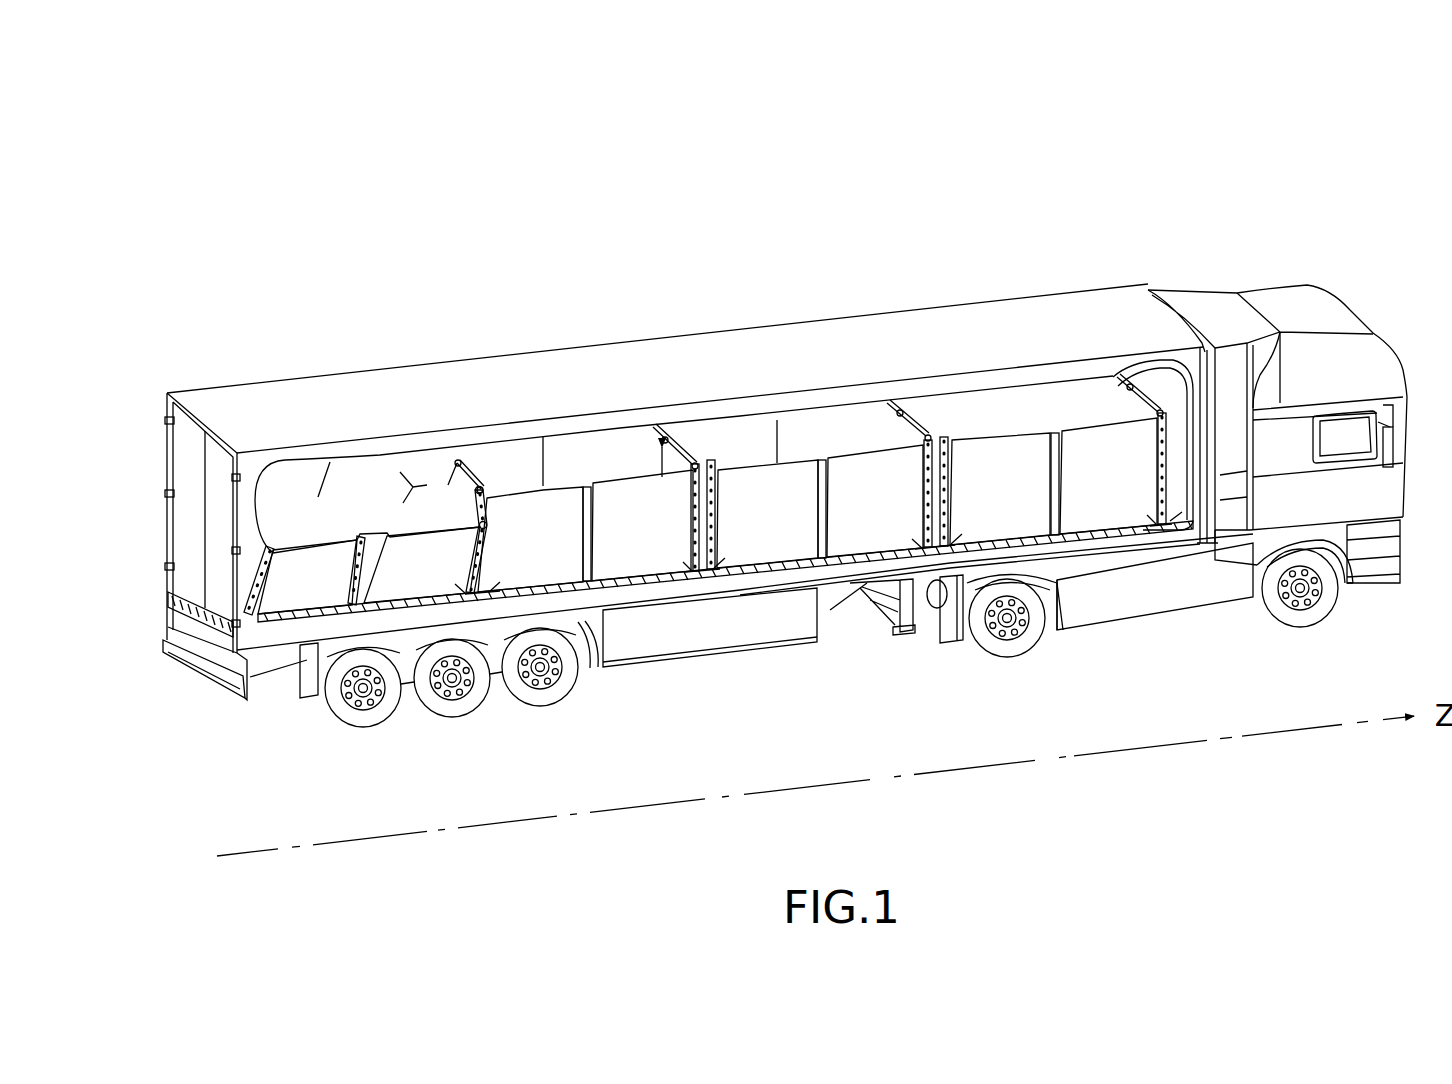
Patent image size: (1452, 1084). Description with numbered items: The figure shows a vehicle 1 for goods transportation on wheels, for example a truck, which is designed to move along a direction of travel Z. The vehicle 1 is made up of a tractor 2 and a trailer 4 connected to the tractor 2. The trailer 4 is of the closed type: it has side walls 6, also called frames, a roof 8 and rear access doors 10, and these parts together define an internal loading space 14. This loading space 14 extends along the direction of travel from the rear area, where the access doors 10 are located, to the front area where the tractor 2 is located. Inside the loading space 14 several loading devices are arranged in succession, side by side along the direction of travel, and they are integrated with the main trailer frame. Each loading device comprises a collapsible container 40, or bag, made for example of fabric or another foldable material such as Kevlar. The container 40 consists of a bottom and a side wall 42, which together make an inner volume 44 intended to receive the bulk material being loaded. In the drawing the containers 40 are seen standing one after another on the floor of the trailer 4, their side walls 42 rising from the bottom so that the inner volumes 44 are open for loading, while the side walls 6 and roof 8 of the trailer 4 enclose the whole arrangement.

The vehicle 1 is at (1190, 150).
The tractor 2 is at (1382, 320).
The trailer 4 is at (337, 368).
The side walls 6 is at (1185, 490).
The roof 8 is at (775, 345).
The rear access doors 10 is at (190, 473).
The internal loading space 14 is at (695, 415).
The collapsible container 40 is at (860, 450).
The side wall 42 is at (522, 531).
The inner volume 44 is at (312, 507).